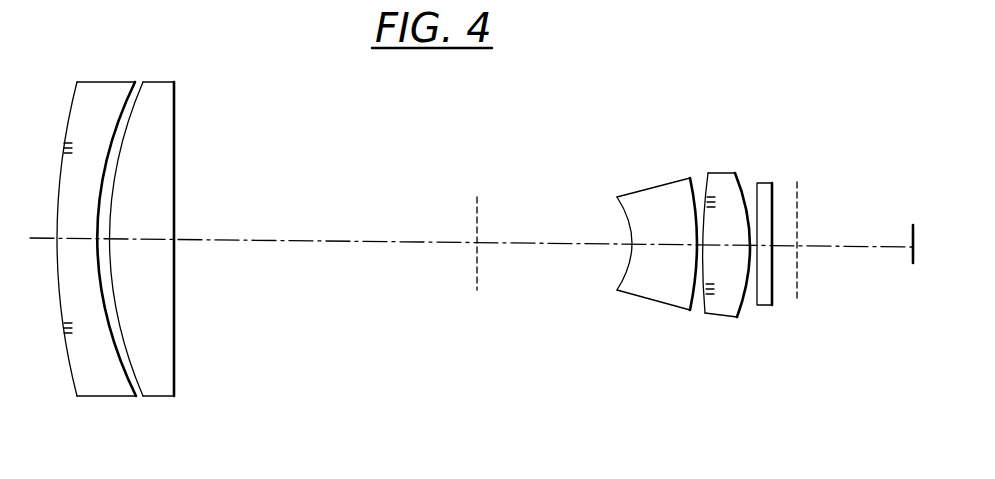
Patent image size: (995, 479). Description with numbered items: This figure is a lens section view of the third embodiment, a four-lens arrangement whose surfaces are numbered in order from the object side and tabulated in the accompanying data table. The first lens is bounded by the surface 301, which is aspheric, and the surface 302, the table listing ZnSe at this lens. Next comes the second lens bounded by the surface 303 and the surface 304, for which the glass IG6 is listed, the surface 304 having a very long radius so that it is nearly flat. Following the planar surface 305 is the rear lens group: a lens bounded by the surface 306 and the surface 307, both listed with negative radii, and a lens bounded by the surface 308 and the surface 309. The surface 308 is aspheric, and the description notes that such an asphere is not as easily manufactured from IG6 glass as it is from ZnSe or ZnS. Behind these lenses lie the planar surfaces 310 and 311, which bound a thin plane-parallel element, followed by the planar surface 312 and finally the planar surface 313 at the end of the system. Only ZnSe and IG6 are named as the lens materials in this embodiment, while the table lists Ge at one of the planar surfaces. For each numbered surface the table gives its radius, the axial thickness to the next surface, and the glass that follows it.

The lens surface 301 is at (72, 385).
The lens surface 302 is at (132, 95).
The lens surface 303 is at (143, 397).
The lens surface 304 is at (174, 90).
The planar surface 305 is at (478, 275).
The lens surface 306 is at (617, 205).
The lens surface 307 is at (697, 302).
The aspheric lens surface 308 is at (708, 178).
The lens surface 309 is at (740, 315).
The planar surface 310 is at (757, 188).
The planar surface 311 is at (772, 300).
The planar surface 312 is at (798, 193).
The planar surface 313 is at (913, 263).